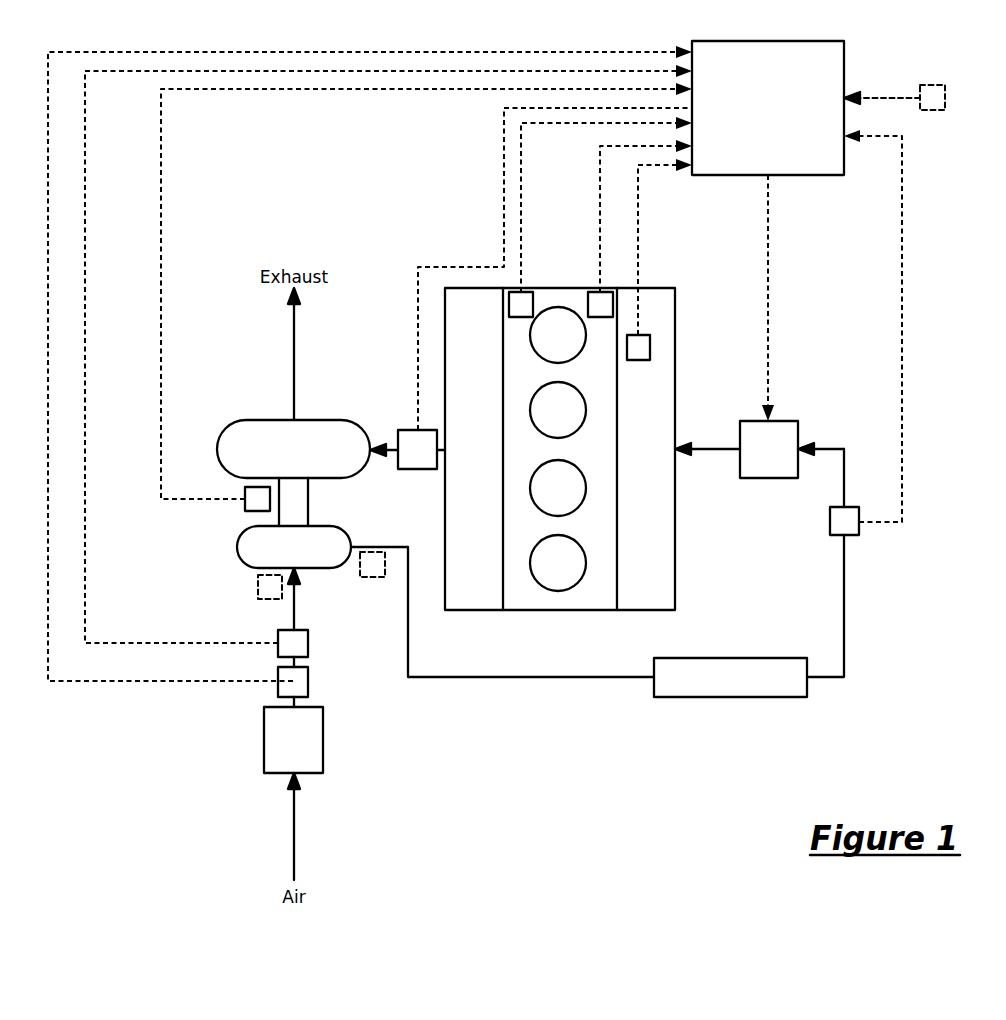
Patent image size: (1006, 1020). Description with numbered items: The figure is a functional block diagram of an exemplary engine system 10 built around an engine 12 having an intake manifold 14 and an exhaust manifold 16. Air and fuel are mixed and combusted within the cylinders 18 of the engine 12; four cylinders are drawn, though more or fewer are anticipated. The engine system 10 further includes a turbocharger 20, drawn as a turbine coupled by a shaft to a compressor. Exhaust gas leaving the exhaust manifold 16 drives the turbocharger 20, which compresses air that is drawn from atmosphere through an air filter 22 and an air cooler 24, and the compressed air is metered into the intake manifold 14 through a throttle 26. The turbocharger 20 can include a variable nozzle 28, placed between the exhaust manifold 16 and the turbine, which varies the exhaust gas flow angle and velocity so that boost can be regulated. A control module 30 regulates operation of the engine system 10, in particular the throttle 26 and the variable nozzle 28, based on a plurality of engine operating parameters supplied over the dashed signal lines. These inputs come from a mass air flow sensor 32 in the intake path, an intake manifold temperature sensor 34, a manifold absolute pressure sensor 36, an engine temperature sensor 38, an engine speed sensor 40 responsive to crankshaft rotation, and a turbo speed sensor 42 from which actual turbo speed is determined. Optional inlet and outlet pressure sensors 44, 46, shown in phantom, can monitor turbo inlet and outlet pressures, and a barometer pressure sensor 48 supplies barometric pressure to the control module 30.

The engine system 10 is at (548, 754).
The engine 12 is at (572, 612).
The intake manifold 14 is at (675, 562).
The exhaust manifold 16 is at (490, 612).
The cylinders 18 is at (548, 590).
The turbocharger 20 is at (256, 394).
The air filter 22 is at (264, 743).
The air cooler 24 is at (807, 682).
The throttle 26 is at (798, 430).
The variable nozzle 28 is at (408, 428).
The control module 30 is at (845, 84).
The mass air flow (MAF) sensor 32 is at (308, 632).
The intake manifold temperature (IMT) sensor 34 is at (859, 525).
The manifold absolute pressure (MAP) sensor 36 is at (650, 348).
The engine temperature sensor 38 is at (613, 305).
The engine speed sensor 40 is at (509, 305).
The turbo speed sensor 42 is at (245, 505).
The inlet pressure sensor 44 is at (258, 588).
The outlet pressure sensor 46 is at (372, 577).
The barometer pressure sensor 48 is at (945, 103).